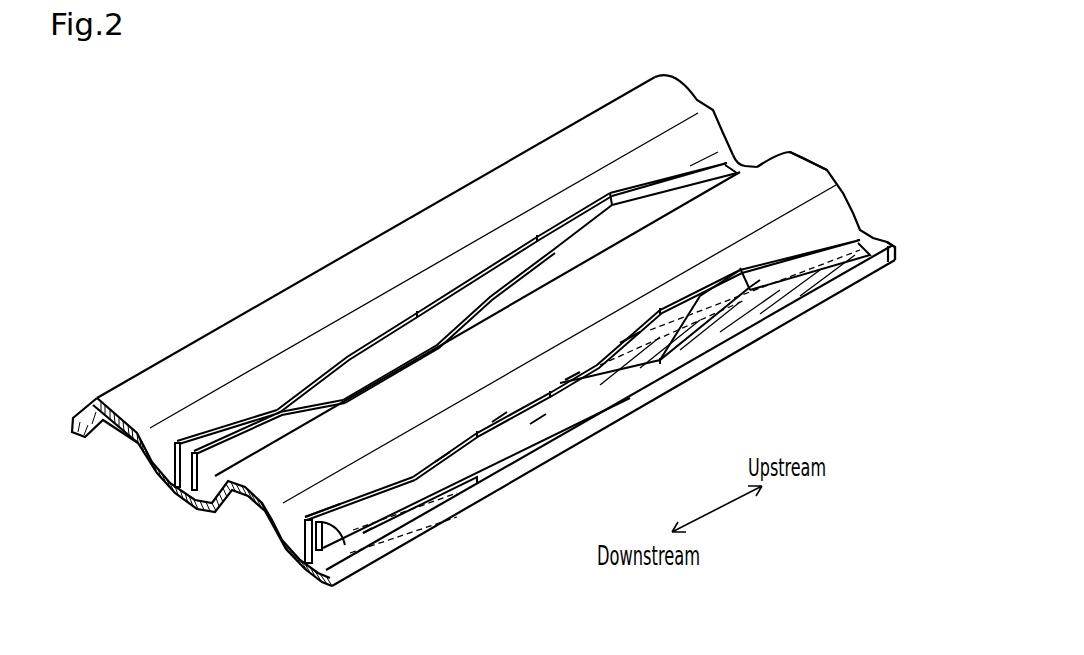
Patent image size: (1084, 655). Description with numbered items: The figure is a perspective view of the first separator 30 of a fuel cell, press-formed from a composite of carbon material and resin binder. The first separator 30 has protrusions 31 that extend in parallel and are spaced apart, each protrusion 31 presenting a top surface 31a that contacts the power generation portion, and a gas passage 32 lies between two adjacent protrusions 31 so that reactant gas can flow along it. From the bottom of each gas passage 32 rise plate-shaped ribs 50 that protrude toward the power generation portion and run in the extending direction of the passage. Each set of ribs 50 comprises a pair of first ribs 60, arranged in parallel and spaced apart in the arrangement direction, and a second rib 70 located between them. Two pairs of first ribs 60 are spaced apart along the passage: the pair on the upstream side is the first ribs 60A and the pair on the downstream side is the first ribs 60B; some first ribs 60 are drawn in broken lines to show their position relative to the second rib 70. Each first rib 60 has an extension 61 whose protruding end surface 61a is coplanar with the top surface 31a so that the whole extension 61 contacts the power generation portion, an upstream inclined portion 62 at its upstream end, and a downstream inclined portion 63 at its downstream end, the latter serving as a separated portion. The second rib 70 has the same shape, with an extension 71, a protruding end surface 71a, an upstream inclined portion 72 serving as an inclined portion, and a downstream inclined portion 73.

The first separator 30 is at (823, 50).
The protrusion 31 is at (651, 93).
The top surface 31a is at (813, 182).
The gas passage 32 is at (737, 165).
The rib 50 is at (484, 348).
The first rib 60 is at (484, 348).
The first rib on the upstream side 60A is at (584, 222).
The first rib on the downstream side 60B is at (192, 450).
The extension 61 is at (690, 298).
The protruding end surface 61a is at (727, 290).
The upstream inclined portion 62 is at (777, 257).
The downstream inclined portion 63 is at (626, 340).
The second rib 70 is at (373, 332).
The extension 71 is at (497, 418).
The protruding end surface 71a is at (536, 420).
The upstream inclined portion 72 is at (570, 378).
The downstream inclined portion 73 is at (440, 455).